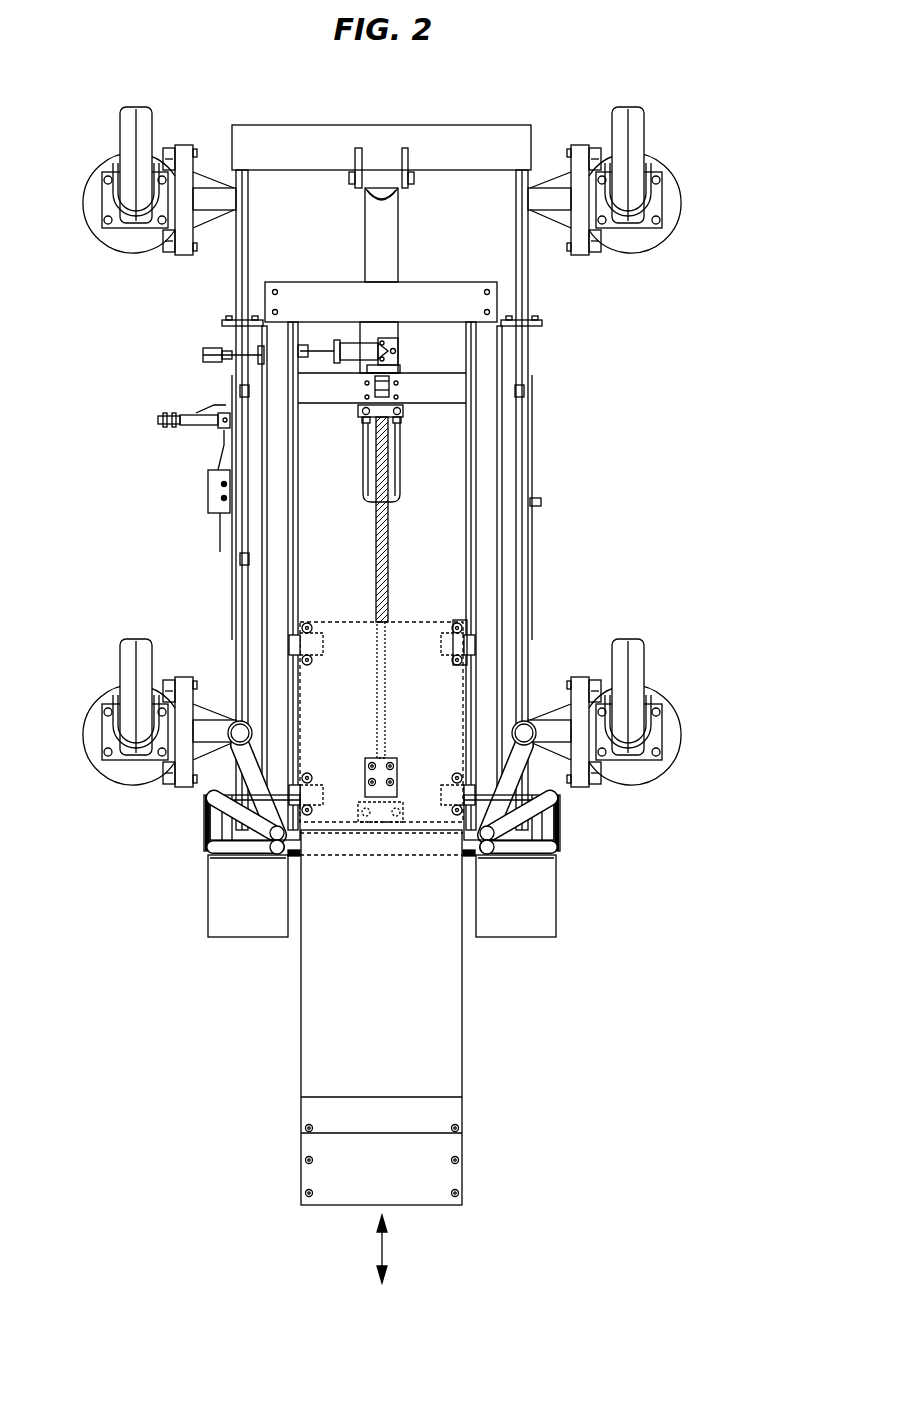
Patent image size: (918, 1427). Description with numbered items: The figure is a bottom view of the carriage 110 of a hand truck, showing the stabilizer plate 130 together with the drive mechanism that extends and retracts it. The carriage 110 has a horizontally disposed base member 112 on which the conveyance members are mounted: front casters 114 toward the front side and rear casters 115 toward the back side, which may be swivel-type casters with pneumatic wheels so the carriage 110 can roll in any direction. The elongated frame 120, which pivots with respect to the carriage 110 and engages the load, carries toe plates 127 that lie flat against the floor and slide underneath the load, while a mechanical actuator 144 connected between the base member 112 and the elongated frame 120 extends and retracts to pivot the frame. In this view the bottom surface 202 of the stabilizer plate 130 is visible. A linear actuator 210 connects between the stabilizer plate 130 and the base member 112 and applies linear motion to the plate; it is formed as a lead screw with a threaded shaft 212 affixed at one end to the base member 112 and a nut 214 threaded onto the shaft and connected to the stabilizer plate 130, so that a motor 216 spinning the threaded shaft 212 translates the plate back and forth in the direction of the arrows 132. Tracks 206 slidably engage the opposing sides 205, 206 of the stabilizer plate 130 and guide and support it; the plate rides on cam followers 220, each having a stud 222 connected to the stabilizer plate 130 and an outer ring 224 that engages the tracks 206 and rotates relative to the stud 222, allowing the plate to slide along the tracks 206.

The carriage 110 is at (666, 380).
The base member 112 is at (235, 290).
The front casters 114 is at (122, 660).
The rear casters 115 is at (122, 128).
The elongated frame 120 is at (560, 833).
The toe plates 127 is at (222, 912).
The stabilizer plate 130 is at (452, 1147).
The vertical travel direction 132 is at (433, 1205).
The mechanical actuator 144 is at (395, 236).
The bottom surface 202 is at (378, 1056).
The opposing sides 205 is at (382, 1017).
The tracks 206 is at (298, 492).
The linear actuator 210 is at (403, 581).
The threaded shaft 212 is at (388, 578).
The nut 214 is at (397, 778).
The motor 216 is at (394, 345).
The cam followers 220 is at (428, 650).
The stud 222 is at (381, 724).
The outer ring 224 is at (470, 635).